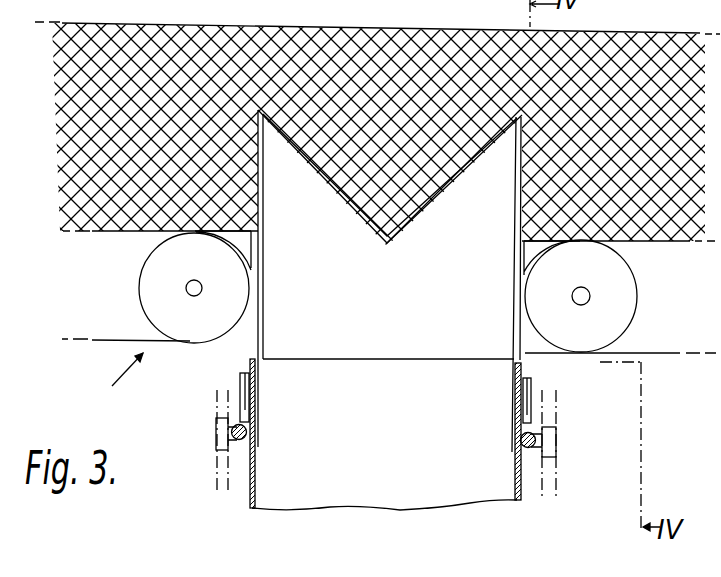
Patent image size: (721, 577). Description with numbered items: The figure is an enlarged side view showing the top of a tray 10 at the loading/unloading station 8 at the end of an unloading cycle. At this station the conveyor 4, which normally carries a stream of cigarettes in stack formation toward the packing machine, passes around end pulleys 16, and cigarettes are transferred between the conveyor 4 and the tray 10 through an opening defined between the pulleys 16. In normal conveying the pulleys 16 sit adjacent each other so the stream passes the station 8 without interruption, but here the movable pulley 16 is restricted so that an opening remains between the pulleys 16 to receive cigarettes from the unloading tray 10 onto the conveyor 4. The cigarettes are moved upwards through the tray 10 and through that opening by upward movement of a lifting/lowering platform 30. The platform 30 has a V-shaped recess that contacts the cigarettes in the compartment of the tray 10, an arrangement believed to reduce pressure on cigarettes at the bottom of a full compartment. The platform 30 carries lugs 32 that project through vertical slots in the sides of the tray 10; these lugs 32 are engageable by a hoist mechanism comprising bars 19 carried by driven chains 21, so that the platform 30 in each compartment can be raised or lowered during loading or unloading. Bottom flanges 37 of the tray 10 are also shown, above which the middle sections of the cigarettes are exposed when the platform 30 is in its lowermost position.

The conveyor 4 is at (106, 232).
The loading/unloading station 8 is at (116, 379).
The tray 10 is at (238, 499).
The end pulley 16 is at (152, 300).
The bar 19 is at (256, 453).
The driven chain 21 is at (215, 486).
The lifting/lowering platform 30 is at (390, 281).
The lug 32 is at (240, 378).
The bottom flange 37 is at (358, 208).